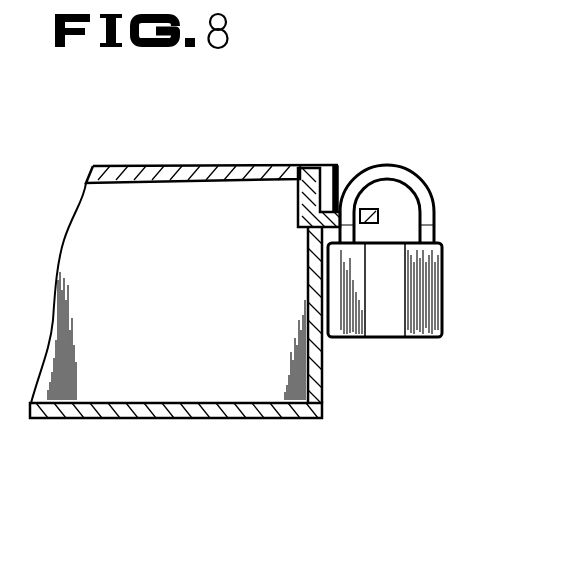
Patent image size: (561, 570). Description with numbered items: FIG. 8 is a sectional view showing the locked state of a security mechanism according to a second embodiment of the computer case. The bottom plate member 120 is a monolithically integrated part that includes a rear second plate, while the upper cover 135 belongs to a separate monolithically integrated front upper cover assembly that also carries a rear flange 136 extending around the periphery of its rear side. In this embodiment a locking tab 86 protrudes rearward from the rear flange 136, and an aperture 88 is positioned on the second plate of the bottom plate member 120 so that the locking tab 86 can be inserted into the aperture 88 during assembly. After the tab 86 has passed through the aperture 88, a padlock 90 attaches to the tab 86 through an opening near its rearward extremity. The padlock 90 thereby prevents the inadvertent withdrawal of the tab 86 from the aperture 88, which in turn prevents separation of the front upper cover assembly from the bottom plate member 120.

The locking tab 86 is at (380, 212).
The aperture 88 is at (329, 212).
The padlock 90 is at (386, 318).
The bottom plate member 120 is at (228, 407).
The upper cover 135 is at (147, 165).
The rear flange 136 is at (296, 170).